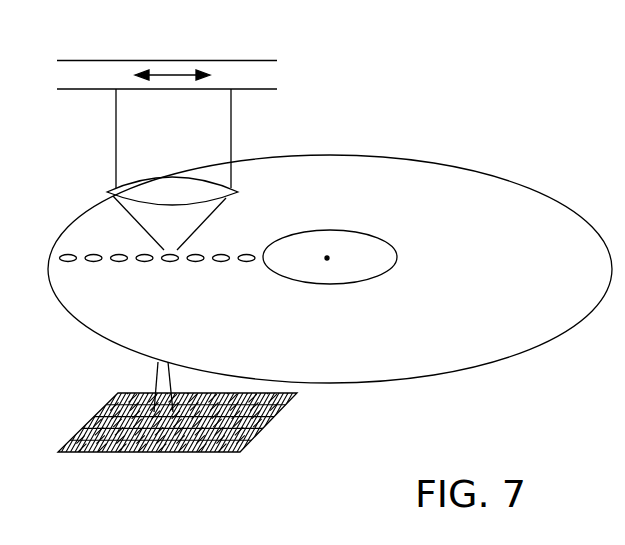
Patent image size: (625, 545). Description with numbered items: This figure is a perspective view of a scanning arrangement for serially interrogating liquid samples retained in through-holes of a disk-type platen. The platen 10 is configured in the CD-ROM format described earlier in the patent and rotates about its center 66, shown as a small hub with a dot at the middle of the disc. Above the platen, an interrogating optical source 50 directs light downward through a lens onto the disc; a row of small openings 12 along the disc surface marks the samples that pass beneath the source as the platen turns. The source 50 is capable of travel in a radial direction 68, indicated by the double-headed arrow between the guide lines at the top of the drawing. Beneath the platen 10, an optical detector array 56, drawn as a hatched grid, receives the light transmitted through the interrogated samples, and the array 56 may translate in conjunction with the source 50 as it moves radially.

The platen 10 is at (548, 309).
The data track / marks 12 is at (58, 258).
The interrogating optical source 50 is at (185, 141).
The optical detector array 56 is at (262, 424).
The center 66 is at (327, 252).
The radial direction 68 is at (169, 72).